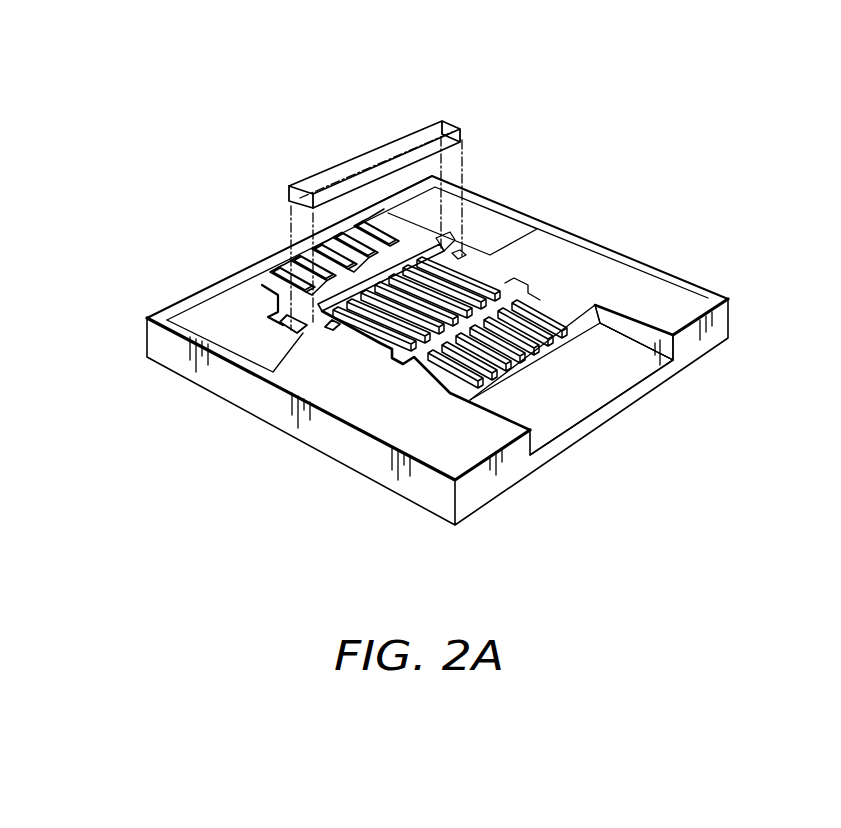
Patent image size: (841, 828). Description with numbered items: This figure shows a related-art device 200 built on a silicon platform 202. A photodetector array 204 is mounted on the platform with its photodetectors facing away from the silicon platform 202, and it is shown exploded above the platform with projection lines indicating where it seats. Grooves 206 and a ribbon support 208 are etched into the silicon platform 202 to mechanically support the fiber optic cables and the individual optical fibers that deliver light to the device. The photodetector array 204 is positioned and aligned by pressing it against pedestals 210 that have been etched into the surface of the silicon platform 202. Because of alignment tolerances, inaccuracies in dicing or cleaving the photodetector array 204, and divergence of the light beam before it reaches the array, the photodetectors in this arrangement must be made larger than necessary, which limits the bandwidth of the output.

The device 200 is at (597, 192).
The silicon platform 202 is at (660, 282).
The photodetector array 204 is at (448, 121).
The grooves 206 is at (588, 333).
The ribbon support 208 is at (549, 398).
The pedestals 210 is at (328, 334).